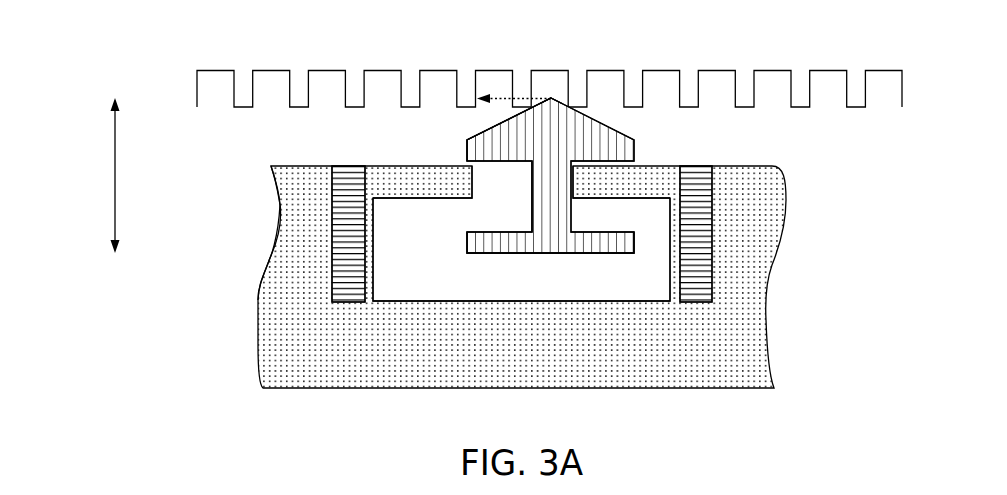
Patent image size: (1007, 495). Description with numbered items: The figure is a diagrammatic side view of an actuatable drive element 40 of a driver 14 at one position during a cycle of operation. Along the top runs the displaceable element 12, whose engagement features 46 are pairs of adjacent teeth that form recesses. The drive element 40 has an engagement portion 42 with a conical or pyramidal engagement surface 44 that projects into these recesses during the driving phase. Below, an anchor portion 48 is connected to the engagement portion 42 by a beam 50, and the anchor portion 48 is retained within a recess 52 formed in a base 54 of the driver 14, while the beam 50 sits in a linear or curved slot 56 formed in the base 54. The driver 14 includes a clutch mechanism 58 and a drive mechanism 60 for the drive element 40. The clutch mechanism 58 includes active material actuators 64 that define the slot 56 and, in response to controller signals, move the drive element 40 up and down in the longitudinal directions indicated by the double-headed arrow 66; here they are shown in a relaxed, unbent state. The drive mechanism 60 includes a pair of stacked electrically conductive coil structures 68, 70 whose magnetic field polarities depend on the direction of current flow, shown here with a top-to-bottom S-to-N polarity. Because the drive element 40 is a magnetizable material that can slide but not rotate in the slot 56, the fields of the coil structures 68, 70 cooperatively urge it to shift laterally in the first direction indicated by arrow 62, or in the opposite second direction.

The displaceable element 12 is at (787, 48).
The driver 14 is at (820, 222).
The actuatable drive element 40 is at (602, 110).
The engagement portion 42 is at (493, 126).
The engagement surface 44 is at (556, 97).
The engagement features 46 is at (827, 118).
The anchor portion 48 is at (555, 253).
The beam 50 is at (532, 212).
The recess 52 is at (442, 287).
The base 54 is at (763, 343).
The slot 56 is at (477, 200).
The clutch mechanism 58 is at (422, 158).
The drive mechanism 60 is at (297, 228).
The arrow indicating first direction 62 is at (503, 98).
The active material actuator 64 is at (602, 195).
The double-headed arrow indicating longitudinal directions 66 is at (87, 175).
The coil structure 68 is at (317, 229).
The coil structure 70 is at (723, 230).